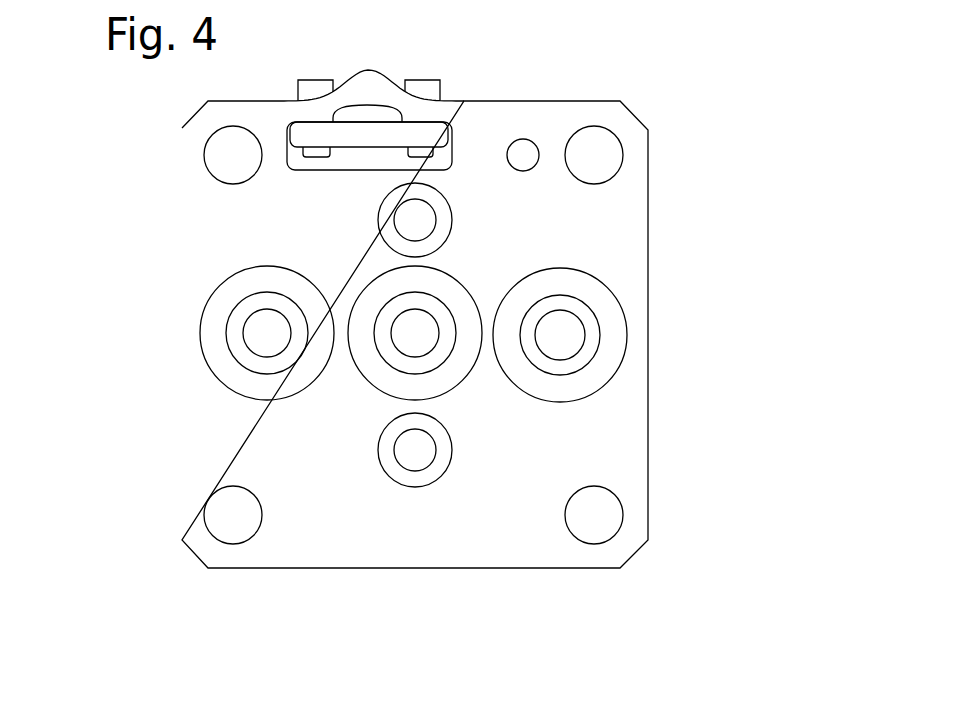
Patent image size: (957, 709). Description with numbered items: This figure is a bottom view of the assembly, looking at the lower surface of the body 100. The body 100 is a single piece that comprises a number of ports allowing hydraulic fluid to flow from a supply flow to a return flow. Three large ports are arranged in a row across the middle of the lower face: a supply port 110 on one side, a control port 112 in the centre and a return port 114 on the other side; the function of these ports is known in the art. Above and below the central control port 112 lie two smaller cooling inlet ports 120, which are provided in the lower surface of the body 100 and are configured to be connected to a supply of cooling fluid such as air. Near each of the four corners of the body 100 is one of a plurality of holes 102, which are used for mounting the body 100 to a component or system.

The body 100 is at (622, 218).
The holes 102 is at (233, 155).
The supply port 110 is at (253, 313).
The control port 112 is at (402, 358).
The return port 114 is at (585, 342).
The cooling inlet ports 120 is at (432, 225).